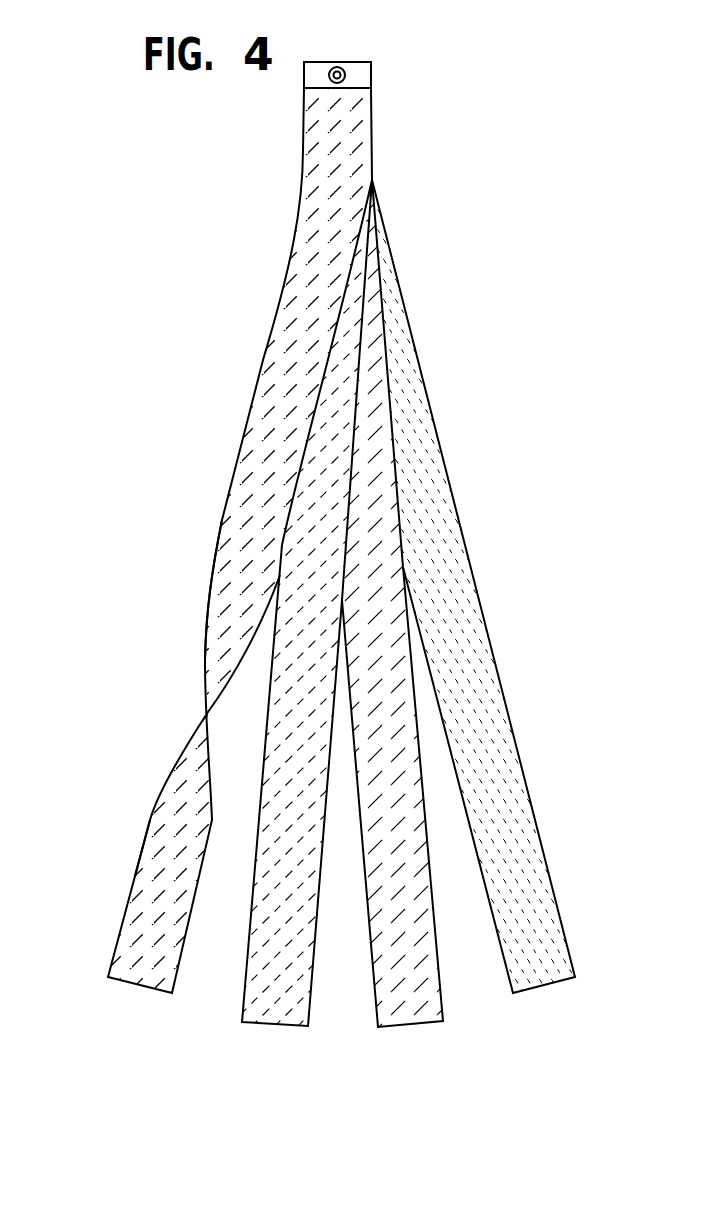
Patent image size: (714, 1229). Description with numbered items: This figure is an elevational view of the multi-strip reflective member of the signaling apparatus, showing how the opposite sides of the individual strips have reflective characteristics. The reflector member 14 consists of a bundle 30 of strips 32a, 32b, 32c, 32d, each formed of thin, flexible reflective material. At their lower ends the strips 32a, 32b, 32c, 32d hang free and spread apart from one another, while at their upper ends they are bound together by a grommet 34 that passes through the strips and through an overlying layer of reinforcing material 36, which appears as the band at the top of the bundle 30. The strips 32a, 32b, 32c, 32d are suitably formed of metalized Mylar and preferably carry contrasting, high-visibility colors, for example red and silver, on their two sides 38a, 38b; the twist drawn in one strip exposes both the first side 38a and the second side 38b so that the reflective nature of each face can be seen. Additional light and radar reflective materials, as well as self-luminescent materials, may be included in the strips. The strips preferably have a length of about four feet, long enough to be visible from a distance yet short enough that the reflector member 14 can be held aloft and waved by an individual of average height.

The reflector member 14 is at (212, 273).
The bundle 30 is at (372, 166).
The strip 32a is at (147, 988).
The strip 32b is at (282, 1031).
The strip 32c is at (407, 1031).
The strip 32d is at (553, 989).
The grommet 34 is at (336, 64).
The reinforcing material 36 is at (363, 74).
The side 38a is at (224, 566).
The side 38b is at (143, 858).